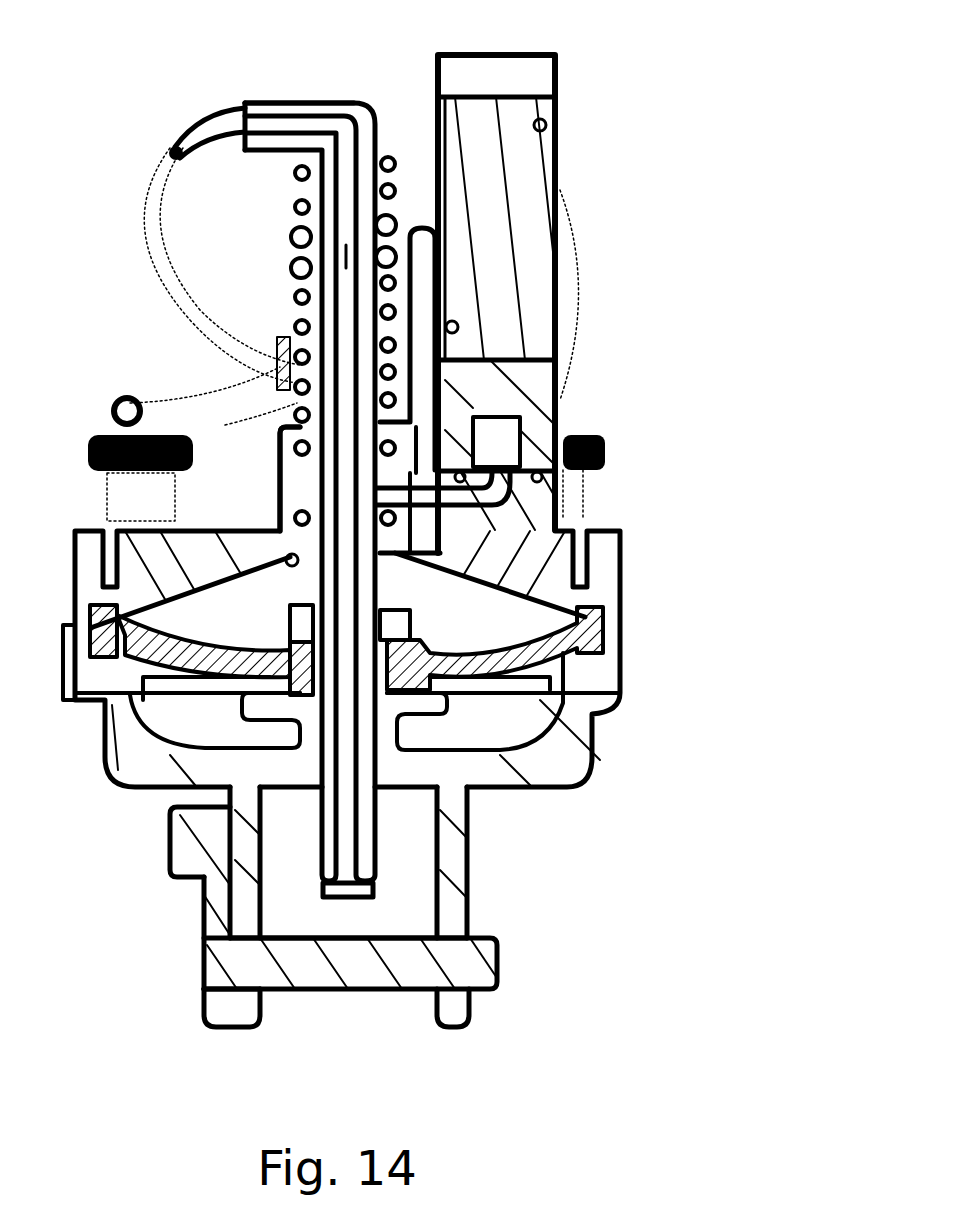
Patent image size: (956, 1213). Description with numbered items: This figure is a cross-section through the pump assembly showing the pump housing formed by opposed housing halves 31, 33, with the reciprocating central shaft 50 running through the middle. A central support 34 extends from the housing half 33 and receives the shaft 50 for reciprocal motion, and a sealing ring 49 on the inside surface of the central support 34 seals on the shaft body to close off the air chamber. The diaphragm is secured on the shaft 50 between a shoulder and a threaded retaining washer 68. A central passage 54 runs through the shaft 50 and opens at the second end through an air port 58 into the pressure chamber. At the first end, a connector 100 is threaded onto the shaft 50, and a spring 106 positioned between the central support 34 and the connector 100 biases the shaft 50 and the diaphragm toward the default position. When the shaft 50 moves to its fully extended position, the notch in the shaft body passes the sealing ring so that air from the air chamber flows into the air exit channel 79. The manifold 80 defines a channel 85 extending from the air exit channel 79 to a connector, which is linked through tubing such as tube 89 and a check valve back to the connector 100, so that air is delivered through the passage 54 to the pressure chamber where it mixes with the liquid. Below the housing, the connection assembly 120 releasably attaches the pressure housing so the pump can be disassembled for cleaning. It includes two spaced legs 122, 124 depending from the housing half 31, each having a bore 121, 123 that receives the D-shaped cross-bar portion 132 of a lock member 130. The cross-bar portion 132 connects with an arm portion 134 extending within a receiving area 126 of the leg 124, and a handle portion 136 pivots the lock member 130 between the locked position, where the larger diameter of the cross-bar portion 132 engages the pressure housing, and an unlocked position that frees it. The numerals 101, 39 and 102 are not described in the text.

The connector 100 is at (326, 100).
The valve stem 101 is at (360, 120).
The guide sleeve 39 is at (421, 228).
The manifold 80 is at (560, 300).
The channel 85 is at (505, 450).
The spring 106 is at (294, 209).
The spring coil 102 is at (292, 254).
The central passage 54 is at (306, 313).
The tube 89 is at (152, 262).
The central support 34 is at (280, 473).
The central shaft 50 is at (290, 558).
The housing half 33 is at (620, 592).
The housing half 31 is at (612, 678).
The threaded retaining washer 68 is at (450, 703).
The sealing ring 49 is at (393, 545).
The air exit channel 79 is at (418, 497).
The connection assembly 120 is at (324, 935).
The leg 124 is at (262, 880).
The handle portion 136 is at (180, 850).
The air port 58 is at (358, 888).
The leg 122 is at (470, 920).
The lock member 130 is at (154, 902).
The arm portion 134 is at (202, 930).
The cross-bar portion 132 is at (492, 962).
The bore 123 is at (272, 998).
The bore 121 is at (478, 998).
The receiving area 126 is at (210, 1022).